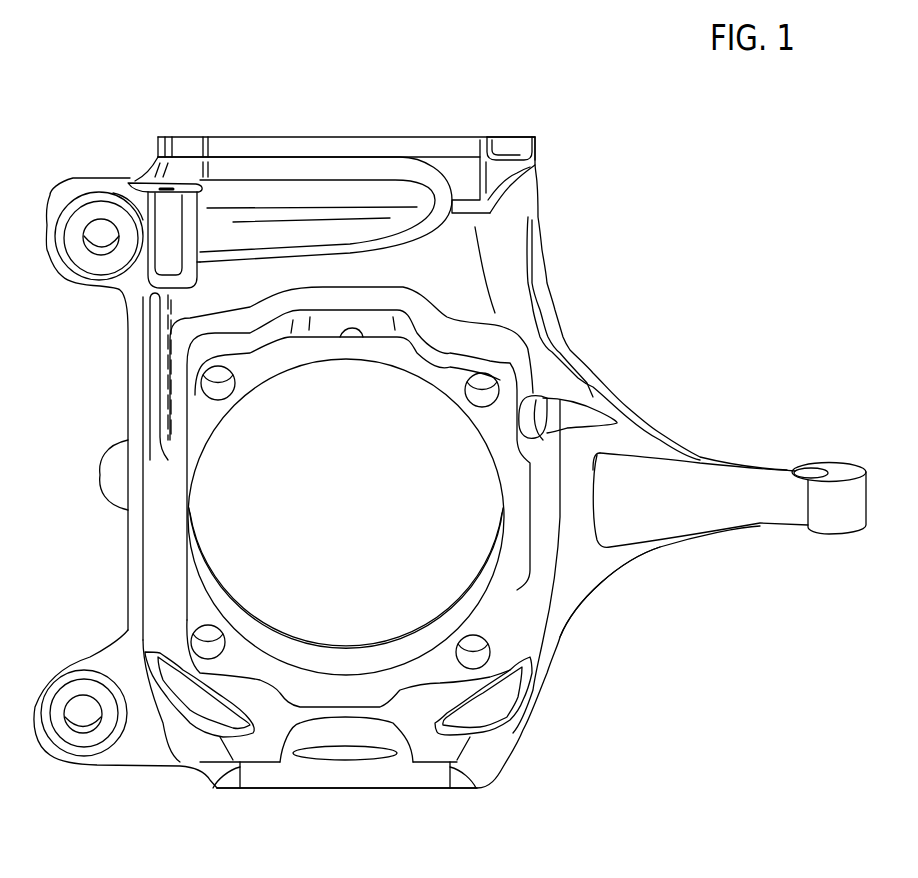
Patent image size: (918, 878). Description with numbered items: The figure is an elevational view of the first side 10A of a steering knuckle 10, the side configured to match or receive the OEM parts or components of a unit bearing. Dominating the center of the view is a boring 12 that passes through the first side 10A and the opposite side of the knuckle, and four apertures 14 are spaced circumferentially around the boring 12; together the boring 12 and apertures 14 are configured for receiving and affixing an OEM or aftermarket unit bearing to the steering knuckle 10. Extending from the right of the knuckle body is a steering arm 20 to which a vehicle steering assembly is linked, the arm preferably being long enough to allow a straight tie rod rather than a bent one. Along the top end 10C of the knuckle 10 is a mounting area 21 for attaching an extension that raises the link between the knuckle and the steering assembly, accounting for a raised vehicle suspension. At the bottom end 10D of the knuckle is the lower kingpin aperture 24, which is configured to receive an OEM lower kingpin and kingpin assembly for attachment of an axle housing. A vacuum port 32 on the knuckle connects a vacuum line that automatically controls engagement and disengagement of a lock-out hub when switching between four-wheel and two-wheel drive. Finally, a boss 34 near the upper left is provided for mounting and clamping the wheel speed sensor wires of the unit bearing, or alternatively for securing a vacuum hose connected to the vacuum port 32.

The steering knuckle 10 is at (410, 462).
The first side 10A is at (560, 637).
The top end 10C is at (460, 136).
The bottom end 10D is at (437, 790).
The boring 12 is at (366, 520).
The apertures 14 is at (218, 385).
The steering arm 20 is at (748, 465).
The mounting area 21 is at (355, 125).
The lower kingpin aperture 24 is at (350, 752).
The vacuum port 32 is at (533, 418).
The boss 34 is at (138, 183).